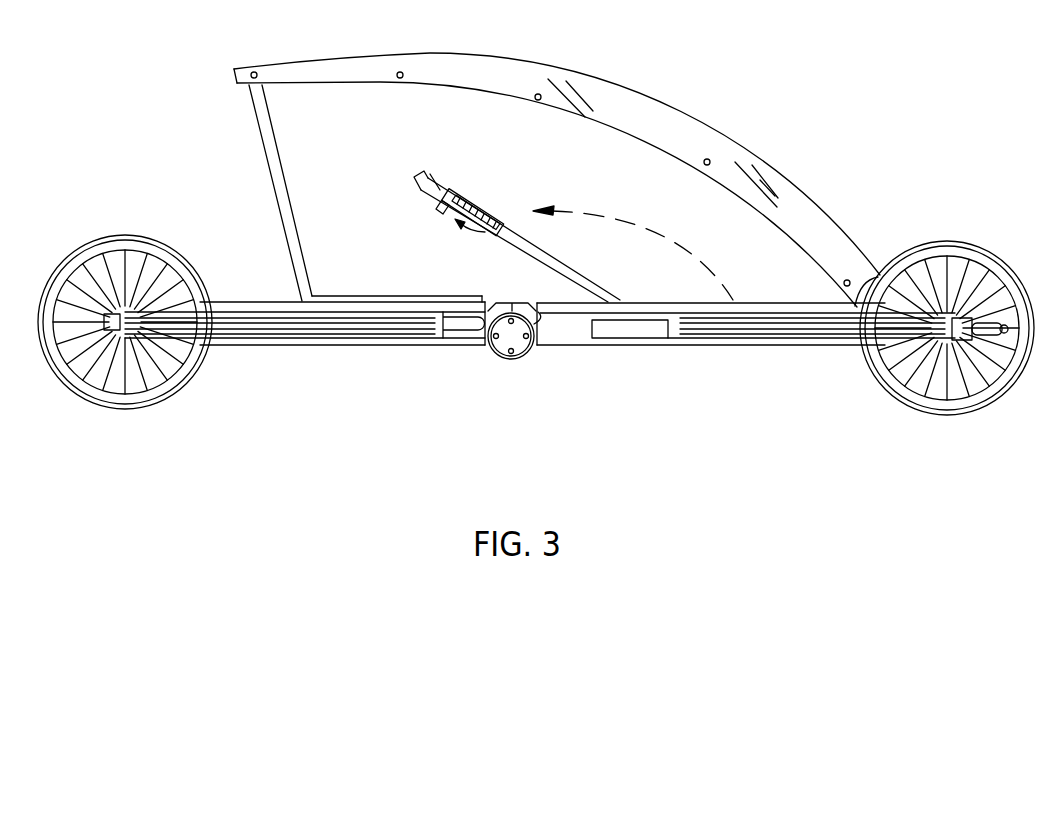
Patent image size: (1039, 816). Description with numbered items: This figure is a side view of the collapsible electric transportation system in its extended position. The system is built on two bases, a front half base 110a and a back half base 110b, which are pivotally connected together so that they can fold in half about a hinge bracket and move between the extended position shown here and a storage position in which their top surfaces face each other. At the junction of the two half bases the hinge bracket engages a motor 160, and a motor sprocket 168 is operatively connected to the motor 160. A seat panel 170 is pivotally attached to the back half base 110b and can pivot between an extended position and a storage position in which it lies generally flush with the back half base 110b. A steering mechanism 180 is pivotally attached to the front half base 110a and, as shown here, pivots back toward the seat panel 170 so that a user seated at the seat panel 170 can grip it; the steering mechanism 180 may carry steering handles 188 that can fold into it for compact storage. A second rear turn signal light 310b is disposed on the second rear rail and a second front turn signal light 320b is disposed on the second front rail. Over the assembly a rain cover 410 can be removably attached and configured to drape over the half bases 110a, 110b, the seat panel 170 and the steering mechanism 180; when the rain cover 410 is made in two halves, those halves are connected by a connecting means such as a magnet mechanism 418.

The rain cover 410 is at (627, 100).
The magnet mechanism 418 is at (708, 159).
The steering mechanism 180 is at (426, 176).
The steering handles 188 is at (442, 211).
The seat panel 170 is at (268, 152).
The back half base 110b is at (305, 346).
The front half base 110a is at (744, 347).
The motor 160 is at (511, 360).
The motor sprocket 168 is at (534, 323).
The second rear turn signal light 310b is at (110, 340).
The second front turn signal light 320b is at (958, 342).